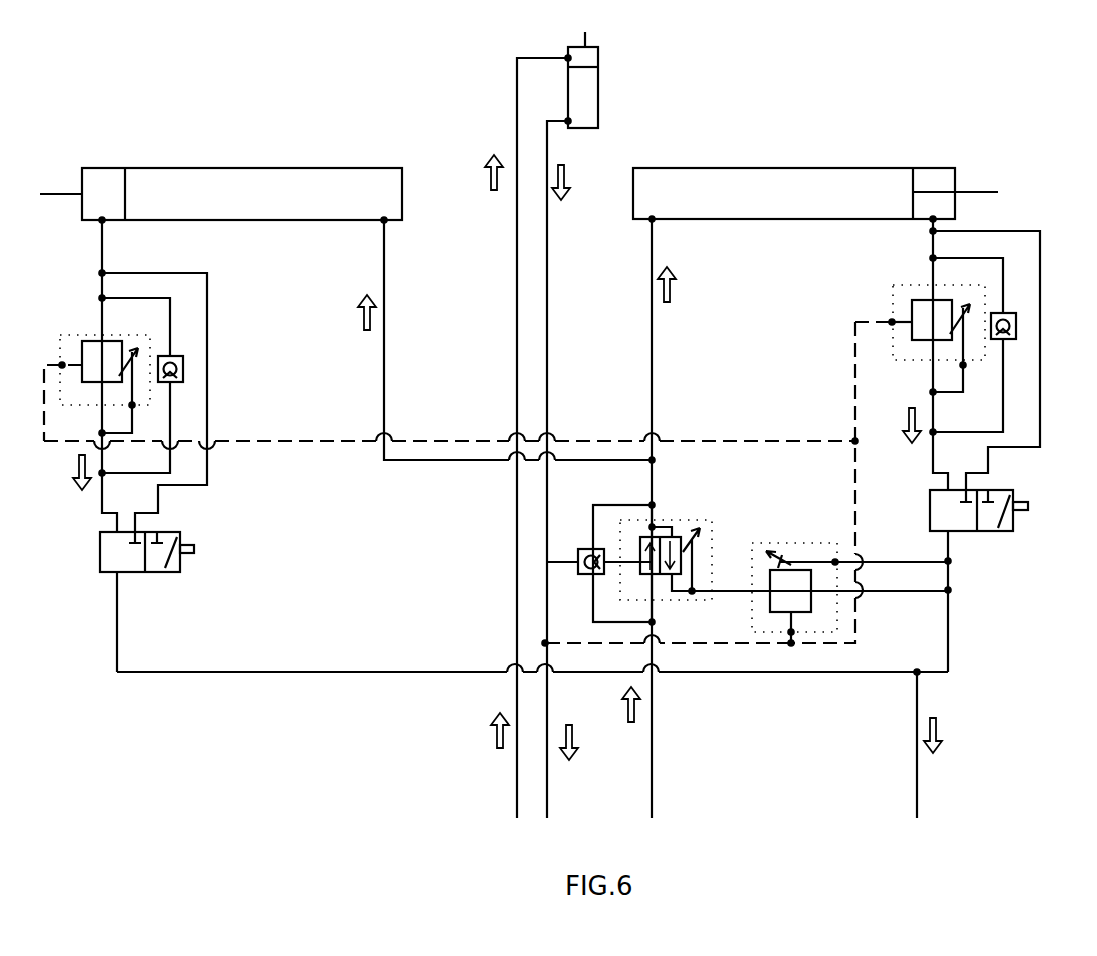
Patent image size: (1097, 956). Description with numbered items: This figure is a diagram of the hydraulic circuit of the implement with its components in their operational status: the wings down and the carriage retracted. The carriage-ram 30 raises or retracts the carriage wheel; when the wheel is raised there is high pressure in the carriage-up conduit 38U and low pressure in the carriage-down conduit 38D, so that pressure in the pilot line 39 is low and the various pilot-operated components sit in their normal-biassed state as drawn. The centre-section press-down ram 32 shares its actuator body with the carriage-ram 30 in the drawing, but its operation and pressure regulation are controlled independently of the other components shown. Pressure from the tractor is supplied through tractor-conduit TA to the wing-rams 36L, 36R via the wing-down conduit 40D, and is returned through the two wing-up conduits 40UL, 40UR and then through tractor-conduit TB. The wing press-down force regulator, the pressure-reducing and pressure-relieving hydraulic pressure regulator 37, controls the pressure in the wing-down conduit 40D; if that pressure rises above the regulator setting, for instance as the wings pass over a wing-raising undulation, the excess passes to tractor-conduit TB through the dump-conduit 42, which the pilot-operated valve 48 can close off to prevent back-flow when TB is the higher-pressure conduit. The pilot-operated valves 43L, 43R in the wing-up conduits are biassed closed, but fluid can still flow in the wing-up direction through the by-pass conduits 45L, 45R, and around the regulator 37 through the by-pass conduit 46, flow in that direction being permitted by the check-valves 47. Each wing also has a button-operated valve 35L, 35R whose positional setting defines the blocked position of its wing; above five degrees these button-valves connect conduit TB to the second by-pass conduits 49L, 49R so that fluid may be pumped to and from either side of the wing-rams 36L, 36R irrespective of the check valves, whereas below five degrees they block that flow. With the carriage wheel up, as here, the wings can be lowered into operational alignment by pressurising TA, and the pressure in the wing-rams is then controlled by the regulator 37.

The carriage wheel up/down hydraulic ram 30 is at (640, 80).
The centre-section press-down hydraulic ram 32 is at (598, 77).
The left wing-ram 36L is at (260, 168).
The right wing-ram 36R is at (808, 168).
The carriage-up conduit 38U is at (517, 258).
The carriage-down conduit 38D is at (547, 300).
The left wing-up conduit 40UL is at (108, 238).
The right wing-up conduit 40UR is at (930, 229).
The wing-down conduit 40D is at (652, 365).
The left pilot-operated valve 43L is at (72, 330).
The right pilot-operated valve 43R is at (883, 298).
The left by-pass conduit 45L is at (172, 320).
The right by-pass conduit 45R is at (993, 255).
The left second by-pass conduit 49L is at (207, 403).
The right second by-pass conduit 49R is at (1040, 231).
The left button-valve 35L is at (137, 572).
The right button-valve 35R is at (967, 533).
The pilot line 39 is at (855, 400).
The by-pass conduit around the regulator 46 is at (592, 525).
The check-valve 47 is at (578, 560).
The hydraulic pressure regulator 37 is at (683, 532).
The pilot-operated valve 48 is at (800, 545).
The dump-conduit 42 is at (898, 592).
The tractor-conduit TA is at (651, 733).
The tractor-conduit TB is at (917, 718).